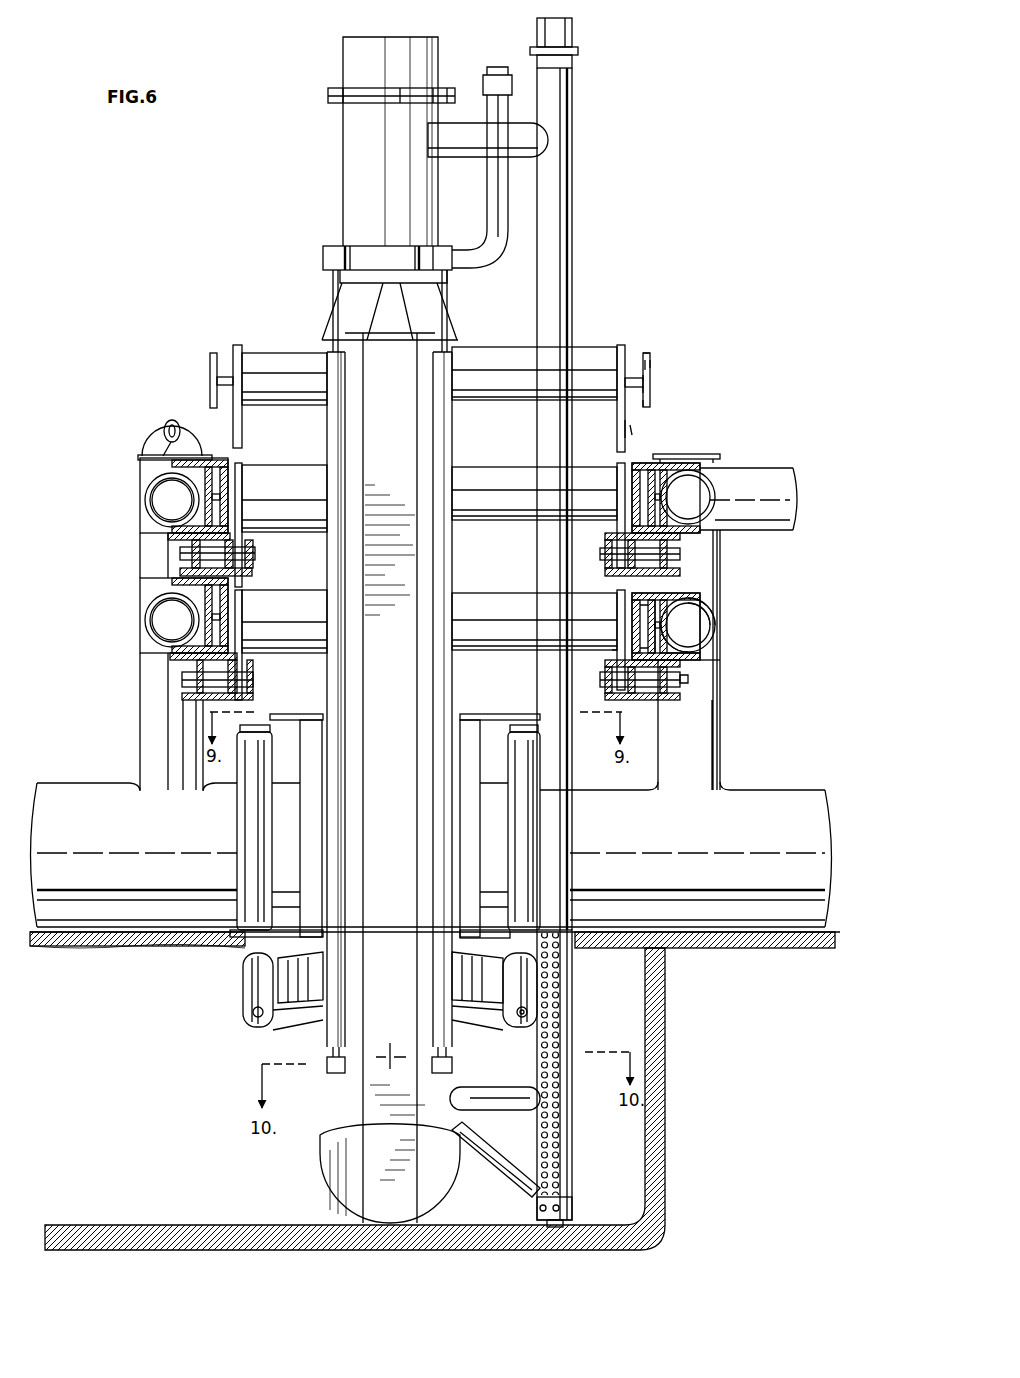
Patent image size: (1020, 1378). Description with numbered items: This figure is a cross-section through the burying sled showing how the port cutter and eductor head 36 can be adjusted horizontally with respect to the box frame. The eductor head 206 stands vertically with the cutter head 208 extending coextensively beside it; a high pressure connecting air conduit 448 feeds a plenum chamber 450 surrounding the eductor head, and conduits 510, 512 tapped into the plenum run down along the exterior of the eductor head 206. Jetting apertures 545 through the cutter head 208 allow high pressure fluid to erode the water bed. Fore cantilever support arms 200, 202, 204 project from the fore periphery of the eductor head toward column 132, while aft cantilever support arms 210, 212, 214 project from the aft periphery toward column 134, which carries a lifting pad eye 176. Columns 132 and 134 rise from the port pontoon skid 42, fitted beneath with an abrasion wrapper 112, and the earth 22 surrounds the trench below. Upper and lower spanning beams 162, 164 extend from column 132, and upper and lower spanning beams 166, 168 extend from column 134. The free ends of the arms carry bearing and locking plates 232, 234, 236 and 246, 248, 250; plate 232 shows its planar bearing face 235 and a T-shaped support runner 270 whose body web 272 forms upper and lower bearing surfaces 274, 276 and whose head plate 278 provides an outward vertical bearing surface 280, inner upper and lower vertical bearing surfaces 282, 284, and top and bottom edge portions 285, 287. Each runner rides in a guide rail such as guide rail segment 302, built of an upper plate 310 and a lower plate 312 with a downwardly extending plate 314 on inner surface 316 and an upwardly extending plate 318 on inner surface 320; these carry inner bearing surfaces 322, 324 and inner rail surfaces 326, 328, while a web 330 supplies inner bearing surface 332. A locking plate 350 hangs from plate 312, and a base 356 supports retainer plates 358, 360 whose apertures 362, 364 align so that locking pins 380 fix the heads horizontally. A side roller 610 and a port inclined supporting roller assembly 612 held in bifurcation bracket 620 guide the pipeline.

The port cutter and eductor head 36 is at (278, 238).
The high pressure plenum chamber 450 is at (328, 258).
The conduit 512 is at (335, 282).
The conduit 510 is at (448, 288).
The eductor head 206 is at (462, 333).
The cutter head 208 is at (576, 302).
The high pressure connecting air conduit 448 is at (493, 174).
The aft cantilever support arm 210 is at (283, 358).
The bearing and locking plate 246 is at (234, 348).
The bearing and locking plate 248 is at (236, 460).
The aft cantilever support arm 212 is at (281, 482).
The aft cantilever support arm 214 is at (285, 601).
The lifting pad eye 176 is at (165, 397).
The upper spanning beam 166 is at (163, 480).
The lower spanning beam 168 is at (159, 593).
The bearing and locking plate 250 is at (243, 656).
The column 134 is at (146, 714).
The fore cantilever support arm 200 is at (581, 360).
The fore cantilever support arm 202 is at (515, 484).
The fore cantilever support arm 204 is at (500, 586).
The bearing and locking plate 232 is at (623, 374).
The lower bearing surface 276 is at (629, 389).
The upper bearing surface 274 is at (644, 354).
The inner upper vertical bearing surface 282 is at (650, 355).
The top edge portion 285 is at (656, 365).
The head plate 278 is at (682, 365).
The T-shaped support runner 270 is at (687, 375).
The outwardly facing vertical bearing surface 280 is at (653, 387).
The bottom edge portion 287 is at (642, 402).
The inner lower vertical bearing surface 284 is at (645, 425).
The body web 272 is at (637, 424).
The bearing face 235 is at (632, 432).
The bearing and locking plate 234 is at (620, 475).
The bearing and locking plate 236 is at (626, 590).
The upper spanning beam 162 is at (708, 474).
The lower spanning beam 164 is at (700, 610).
The upper horizontally extending plate 310 is at (673, 593).
The inner surface 316 is at (663, 600).
The downwardly extending plate 314 is at (637, 600).
The inner bearing surface 322 is at (690, 613).
The inner rail surface 326 is at (633, 630).
The inner bearing surface 332 is at (667, 622).
The inner rail surface 328 is at (640, 633).
The web 330 is at (653, 647).
The upwardly extending plate 318 is at (613, 653).
The inner bearing surface 324 is at (650, 648).
The lower horizontally extending plate 312 is at (680, 647).
The apertures 362 is at (617, 677).
The inner surface 320 is at (673, 660).
The retainer plate 358 is at (623, 688).
The locking bolt or pin 380 is at (677, 680).
The retainer plate 360 is at (622, 698).
The horizontally extending base 356 is at (638, 700).
The apertures 364 is at (647, 700).
The locking plate 350 is at (687, 707).
The guide rail segment 302 is at (702, 719).
The column 132 is at (720, 772).
The port pontoon skid 42 is at (122, 828).
The abrasion wrapper 112 is at (126, 922).
The earth 22 is at (117, 975).
The side roller 610 is at (527, 828).
The port inclined supporting roller assembly 612 is at (517, 980).
The bifurcation bracket 620 is at (508, 1020).
The jetting apertures 545 is at (576, 1017).